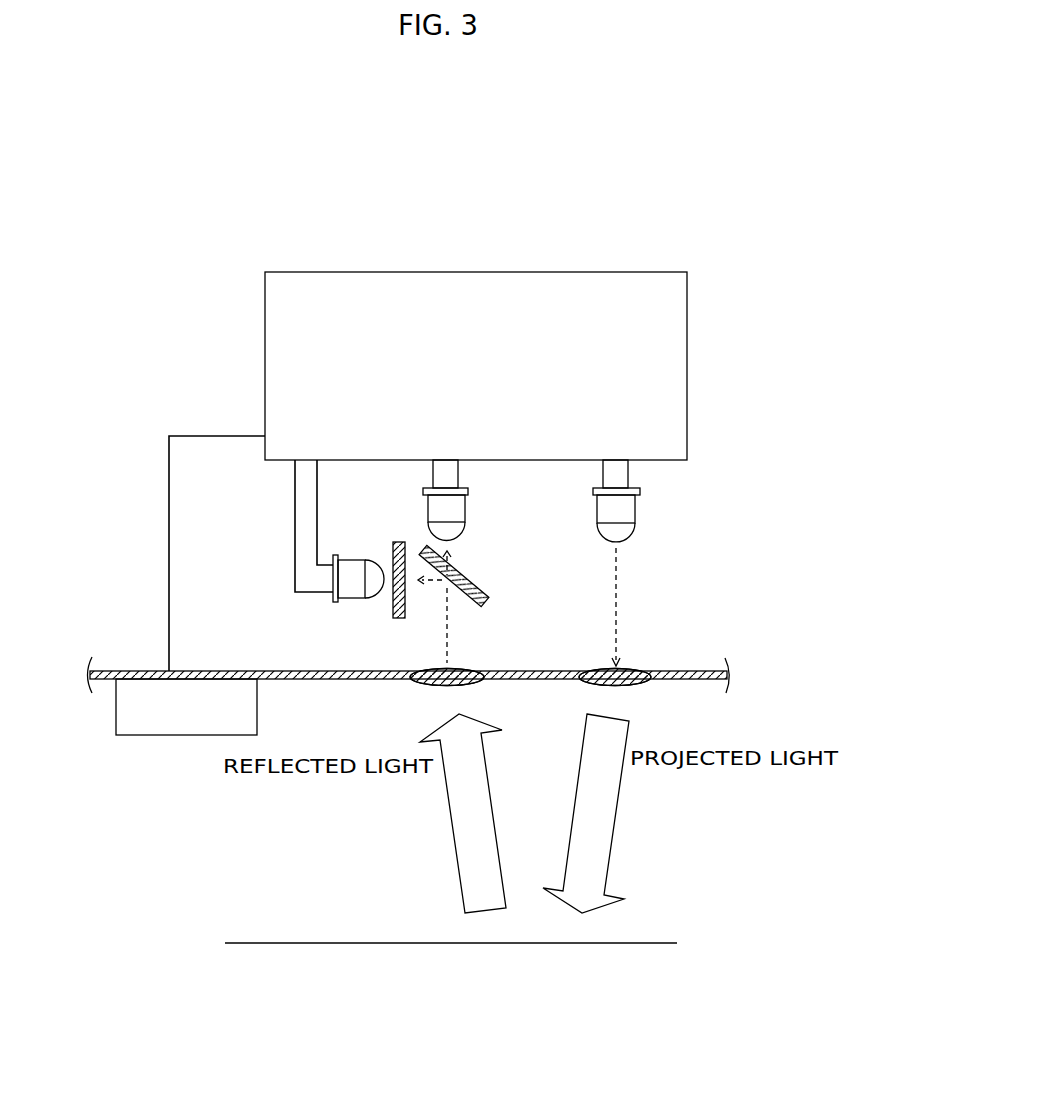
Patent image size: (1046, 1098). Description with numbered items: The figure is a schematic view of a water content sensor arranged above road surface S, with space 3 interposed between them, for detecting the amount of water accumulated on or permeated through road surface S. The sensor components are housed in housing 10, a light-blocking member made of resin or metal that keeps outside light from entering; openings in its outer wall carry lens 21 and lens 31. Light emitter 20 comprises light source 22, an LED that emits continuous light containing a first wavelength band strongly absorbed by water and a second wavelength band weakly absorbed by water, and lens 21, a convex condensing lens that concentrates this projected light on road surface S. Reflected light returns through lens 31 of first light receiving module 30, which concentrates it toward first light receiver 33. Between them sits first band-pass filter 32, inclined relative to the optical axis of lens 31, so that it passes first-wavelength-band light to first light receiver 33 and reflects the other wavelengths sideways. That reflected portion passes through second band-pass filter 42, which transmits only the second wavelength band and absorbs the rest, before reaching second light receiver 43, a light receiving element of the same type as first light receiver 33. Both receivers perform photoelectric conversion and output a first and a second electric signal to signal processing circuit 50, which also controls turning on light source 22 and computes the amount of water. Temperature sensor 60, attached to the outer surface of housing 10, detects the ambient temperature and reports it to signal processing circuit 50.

The space 3 is at (706, 798).
The housing 10 is at (692, 680).
The light emitter 20 is at (669, 580).
The lens 21 is at (640, 672).
The light source 22 is at (625, 512).
The first light receiving module 30 is at (508, 592).
The lens 31 is at (468, 672).
The first band-pass filter 32 is at (470, 583).
The first light receiver 33 is at (450, 505).
The second band-pass filter 42 is at (399, 542).
The second light receiver 43 is at (348, 570).
The signal processing circuit 50 is at (653, 397).
The temperature sensor 60 is at (242, 720).
The road surface S is at (643, 943).